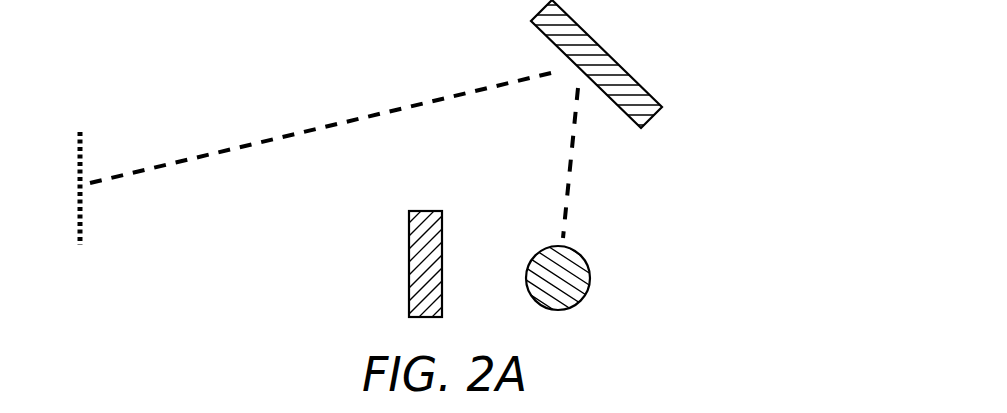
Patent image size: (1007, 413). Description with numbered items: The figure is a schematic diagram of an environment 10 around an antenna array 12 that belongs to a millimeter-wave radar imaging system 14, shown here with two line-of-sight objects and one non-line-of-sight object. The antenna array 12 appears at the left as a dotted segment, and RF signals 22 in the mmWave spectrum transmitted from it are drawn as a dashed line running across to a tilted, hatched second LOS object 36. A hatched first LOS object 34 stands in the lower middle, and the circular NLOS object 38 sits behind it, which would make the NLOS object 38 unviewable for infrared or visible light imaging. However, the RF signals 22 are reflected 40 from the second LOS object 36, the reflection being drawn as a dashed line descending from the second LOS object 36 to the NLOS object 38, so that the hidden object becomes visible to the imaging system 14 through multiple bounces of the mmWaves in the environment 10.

The environment 10 is at (258, 48).
The antenna array 12 is at (80, 153).
The imaging system 14 is at (85, 97).
The RF signals 22 is at (417, 104).
The first LOS object 34 is at (430, 210).
The second LOS object 36 is at (618, 60).
The NLOS object 38 is at (583, 251).
The reflected RF signals 40 is at (568, 182).